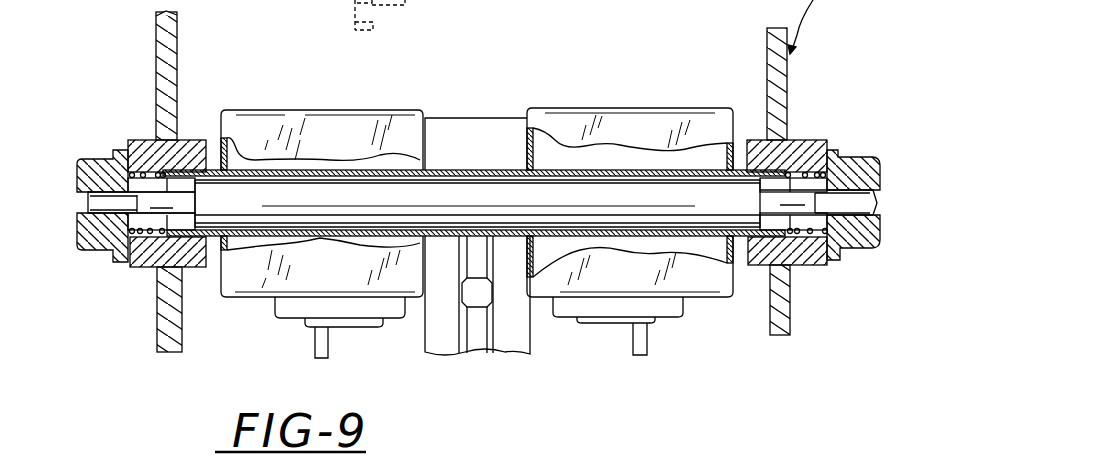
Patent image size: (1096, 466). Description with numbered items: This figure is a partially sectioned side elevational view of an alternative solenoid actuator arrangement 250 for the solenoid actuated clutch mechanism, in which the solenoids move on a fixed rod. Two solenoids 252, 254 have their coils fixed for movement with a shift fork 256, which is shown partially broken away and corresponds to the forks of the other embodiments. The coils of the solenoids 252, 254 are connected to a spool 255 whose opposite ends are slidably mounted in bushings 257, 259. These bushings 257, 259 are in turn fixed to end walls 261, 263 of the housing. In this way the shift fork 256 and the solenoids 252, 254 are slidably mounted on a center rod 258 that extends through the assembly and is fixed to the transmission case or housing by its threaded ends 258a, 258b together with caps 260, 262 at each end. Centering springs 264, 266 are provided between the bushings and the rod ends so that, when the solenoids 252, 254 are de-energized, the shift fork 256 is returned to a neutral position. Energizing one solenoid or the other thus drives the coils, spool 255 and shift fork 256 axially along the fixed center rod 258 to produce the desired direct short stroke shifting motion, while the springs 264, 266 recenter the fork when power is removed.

The solenoid actuator arrangement 250 is at (641, 100).
The solenoid 252 is at (340, 120).
The solenoid 254 is at (575, 123).
The spool 255 is at (438, 173).
The shift fork 256 is at (518, 330).
The bushing 257 is at (187, 147).
The center rod 258 is at (645, 185).
The threaded end 258a is at (130, 212).
The threaded end 258b is at (810, 193).
The bushing 259 is at (807, 142).
The cap 260 is at (93, 168).
The end wall 261 is at (168, 318).
The cap 262 is at (870, 238).
The end wall 263 is at (782, 92).
The centering spring 264 is at (142, 172).
The centering spring 266 is at (810, 237).